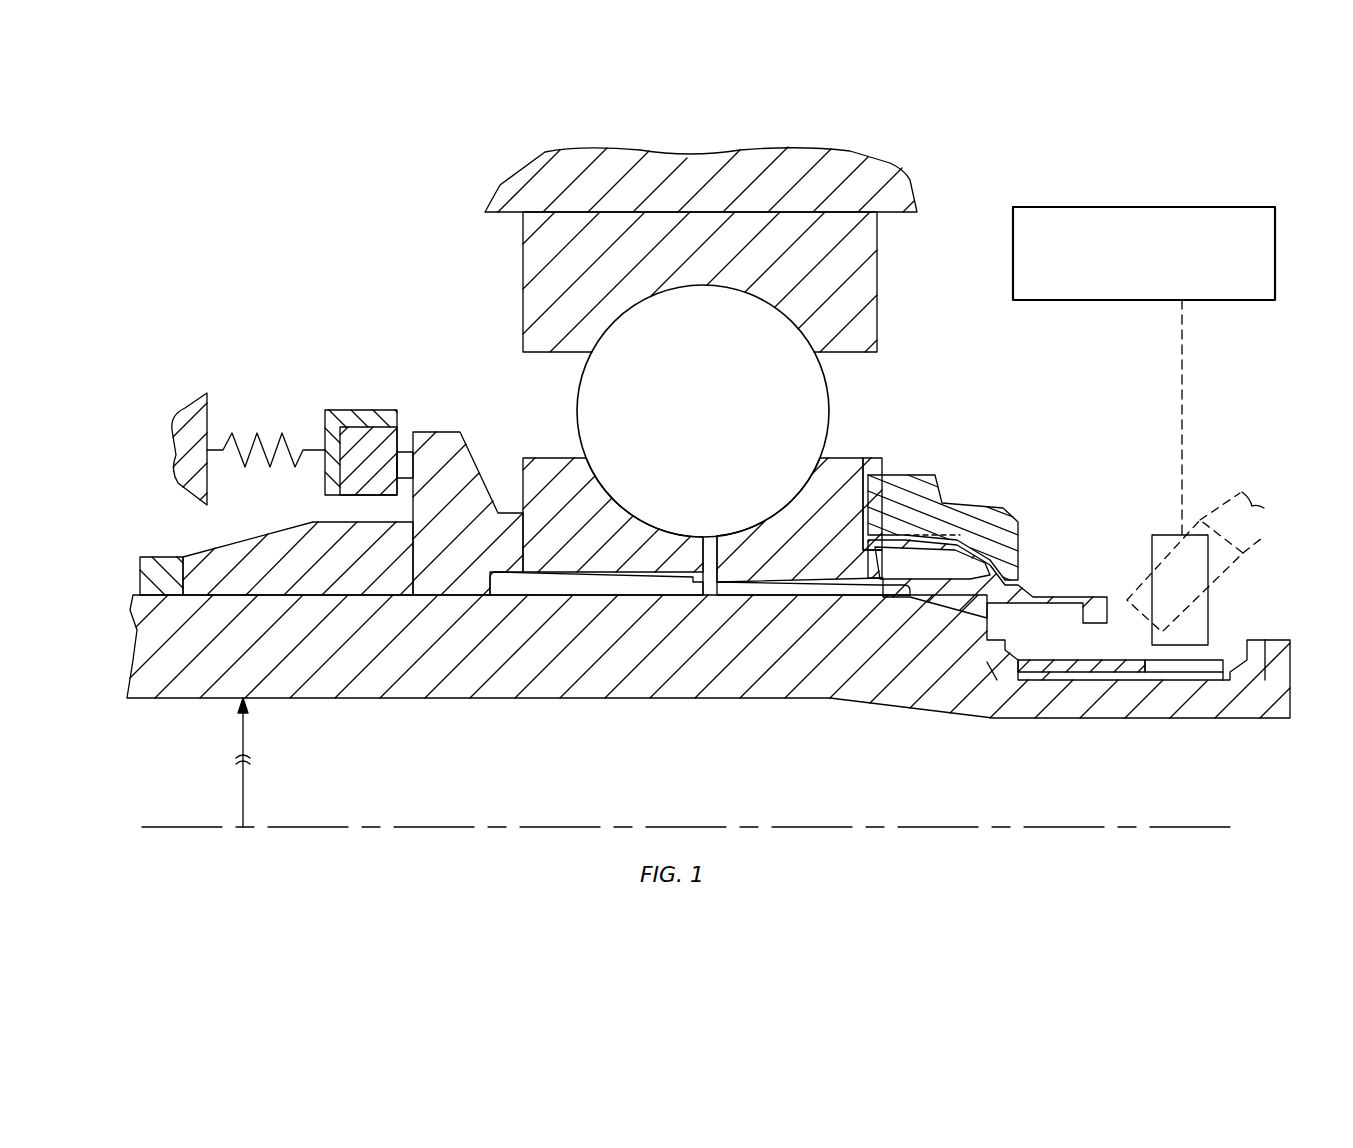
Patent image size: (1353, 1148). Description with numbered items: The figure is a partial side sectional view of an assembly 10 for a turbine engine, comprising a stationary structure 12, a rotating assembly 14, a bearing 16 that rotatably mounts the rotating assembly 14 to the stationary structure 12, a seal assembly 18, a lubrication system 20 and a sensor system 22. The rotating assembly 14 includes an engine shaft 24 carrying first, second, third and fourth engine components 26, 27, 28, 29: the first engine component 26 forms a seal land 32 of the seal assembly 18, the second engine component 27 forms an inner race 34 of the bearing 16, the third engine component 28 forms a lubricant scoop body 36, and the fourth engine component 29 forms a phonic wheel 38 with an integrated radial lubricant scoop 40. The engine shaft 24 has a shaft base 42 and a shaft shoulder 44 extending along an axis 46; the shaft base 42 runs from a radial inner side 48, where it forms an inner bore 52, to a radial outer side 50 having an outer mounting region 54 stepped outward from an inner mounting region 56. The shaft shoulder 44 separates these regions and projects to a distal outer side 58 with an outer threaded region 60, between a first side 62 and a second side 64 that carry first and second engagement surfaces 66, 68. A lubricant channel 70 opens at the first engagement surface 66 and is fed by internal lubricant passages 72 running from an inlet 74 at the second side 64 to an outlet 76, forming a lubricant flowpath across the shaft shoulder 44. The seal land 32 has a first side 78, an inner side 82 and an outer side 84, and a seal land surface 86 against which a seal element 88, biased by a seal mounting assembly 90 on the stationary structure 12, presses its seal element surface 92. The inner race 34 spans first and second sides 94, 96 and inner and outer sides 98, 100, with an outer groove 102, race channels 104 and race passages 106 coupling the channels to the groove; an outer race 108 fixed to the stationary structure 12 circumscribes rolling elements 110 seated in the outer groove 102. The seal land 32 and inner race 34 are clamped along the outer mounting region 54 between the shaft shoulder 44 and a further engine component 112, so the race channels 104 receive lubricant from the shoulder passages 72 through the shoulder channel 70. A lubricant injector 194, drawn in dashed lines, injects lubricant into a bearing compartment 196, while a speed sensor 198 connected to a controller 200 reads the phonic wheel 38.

The assembly 10 is at (179, 160).
The stationary structure 12 is at (558, 168).
The rotating assembly 14 is at (699, 672).
The bearing 16 is at (629, 277).
The seal assembly 18 is at (308, 387).
The lubrication system 20 is at (1204, 536).
The sensor system 22 is at (1150, 240).
The engine shaft 24 is at (699, 672).
The first engine component 26 is at (446, 464).
The second engine component 27 is at (839, 573).
The third engine component 28 is at (998, 533).
The fourth engine component 29 is at (699, 672).
The seal land 32 is at (412, 440).
The inner race 34 is at (839, 573).
The lubricant scoop body 36 is at (998, 533).
The phonic wheel 38 is at (699, 672).
The radial lubricant scoop 40 is at (1182, 698).
The shaft base 42 is at (699, 672).
The shaft shoulder 44 is at (927, 575).
The axis 46 is at (160, 827).
The radial inner side 48 is at (699, 672).
The radial outer side 50 is at (298, 545).
The inner bore 52 is at (169, 797).
The outer mounting region 54 is at (699, 672).
The inner mounting region 56 is at (699, 672).
The shoulder outer side 58 is at (948, 509).
The outer threaded region 60 is at (937, 537).
The shoulder first side 62 is at (839, 573).
The shoulder second side 64 is at (988, 589).
The shoulder first engagement surface 66 is at (839, 573).
The shoulder second engagement surface 68 is at (988, 589).
The lubricant channel 70 is at (710, 547).
The internal lubricant passages 72 is at (699, 672).
The inlet 74 is at (987, 577).
The outlet 76 is at (699, 672).
The seal land first side 78 is at (248, 593).
The seal land inner side 82 is at (699, 672).
The seal land outer side 84 is at (446, 464).
The seal land surface 86 is at (446, 464).
The seal element 88 is at (352, 473).
The seal mounting assembly 90 is at (253, 360).
The seal element surface 92 is at (446, 464).
The inner race first side 94 is at (548, 458).
The inner race second side 96 is at (882, 467).
The inner race inner side 98 is at (537, 597).
The inner race outer side 100 is at (585, 489).
The outer groove 102 is at (637, 480).
The inner lubricant channel 104 is at (743, 590).
The internal lubricant passage 106 is at (839, 573).
The outer race 108 is at (505, 228).
The rolling elements 110 is at (685, 402).
The engine component 112 is at (150, 572).
The lubricant injector 194 is at (1245, 553).
The bearing compartment 196 is at (930, 310).
The speed sensor 198 is at (1165, 535).
The controller 200 is at (1213, 181).